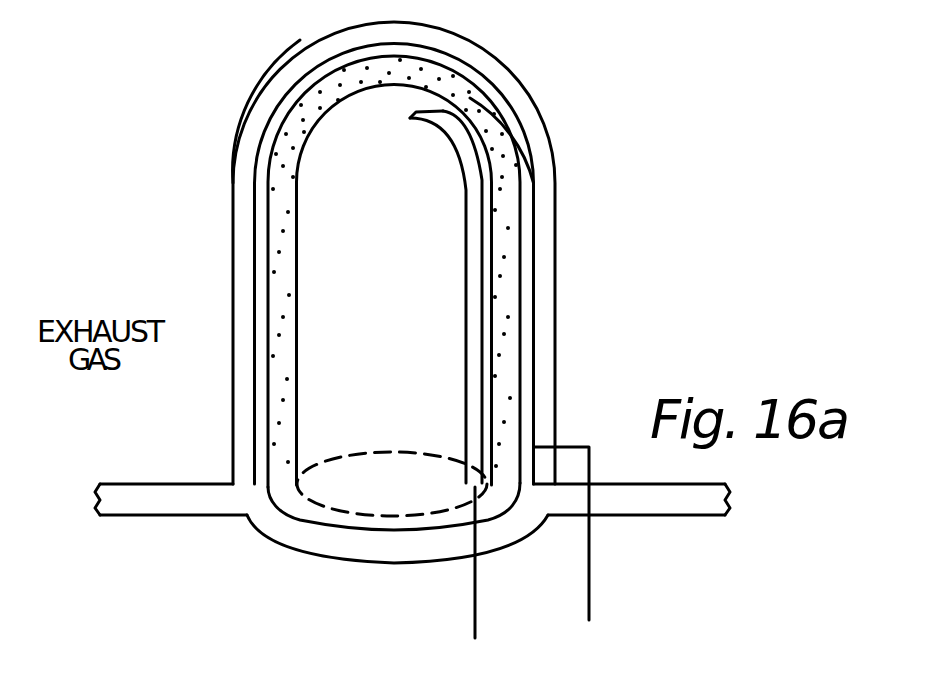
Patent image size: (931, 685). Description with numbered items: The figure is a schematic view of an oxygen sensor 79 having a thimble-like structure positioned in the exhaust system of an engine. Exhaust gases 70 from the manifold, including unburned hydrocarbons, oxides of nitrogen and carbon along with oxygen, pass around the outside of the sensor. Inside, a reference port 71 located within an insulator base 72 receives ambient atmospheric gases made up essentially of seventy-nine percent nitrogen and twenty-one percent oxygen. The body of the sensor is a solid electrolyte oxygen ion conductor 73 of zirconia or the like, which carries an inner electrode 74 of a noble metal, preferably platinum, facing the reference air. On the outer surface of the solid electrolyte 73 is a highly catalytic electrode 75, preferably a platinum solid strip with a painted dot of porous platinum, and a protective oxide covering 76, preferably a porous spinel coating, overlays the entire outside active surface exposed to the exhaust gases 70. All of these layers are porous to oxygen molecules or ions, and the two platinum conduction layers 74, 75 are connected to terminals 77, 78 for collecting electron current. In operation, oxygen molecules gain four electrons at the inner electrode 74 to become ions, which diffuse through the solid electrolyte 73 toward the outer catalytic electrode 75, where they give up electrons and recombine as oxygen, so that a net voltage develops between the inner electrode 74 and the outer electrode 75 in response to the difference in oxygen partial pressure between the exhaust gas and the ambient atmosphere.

The exhaust gases 70 is at (595, 80).
The reference port 71 is at (392, 387).
The insulator base 72 is at (214, 503).
The solid electrolyte oxygen ion conductor 73 is at (503, 412).
The inner electrode 74 is at (468, 215).
The highly catalytic electrode 75 is at (525, 225).
The protective oxide covering 76 is at (529, 129).
The terminal 77 is at (472, 598).
The terminal 78 is at (592, 565).
The oxygen sensor 79 is at (281, 56).